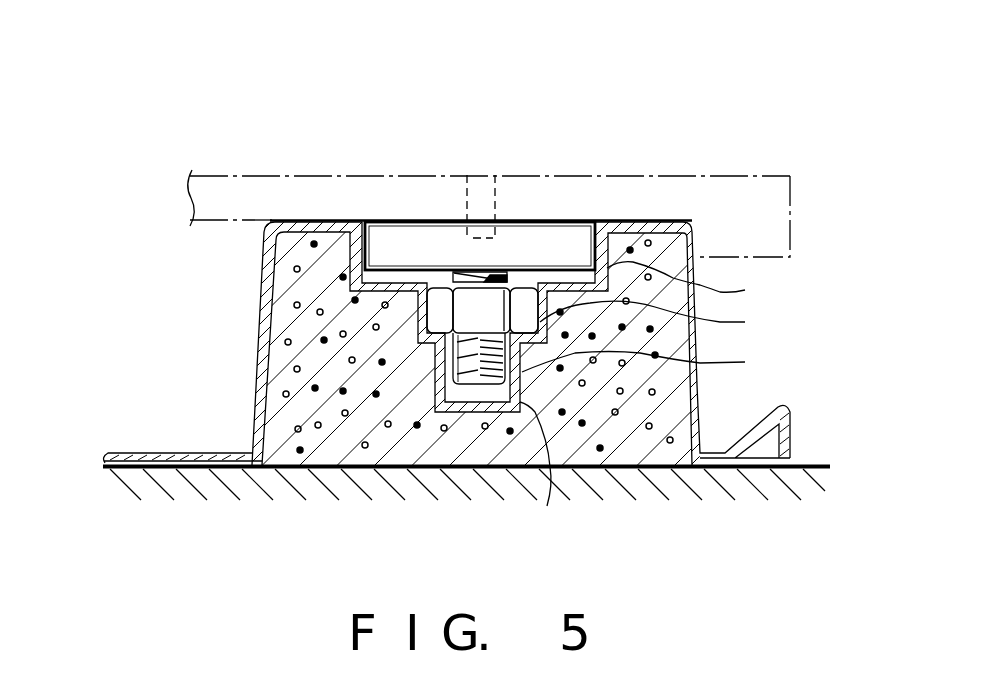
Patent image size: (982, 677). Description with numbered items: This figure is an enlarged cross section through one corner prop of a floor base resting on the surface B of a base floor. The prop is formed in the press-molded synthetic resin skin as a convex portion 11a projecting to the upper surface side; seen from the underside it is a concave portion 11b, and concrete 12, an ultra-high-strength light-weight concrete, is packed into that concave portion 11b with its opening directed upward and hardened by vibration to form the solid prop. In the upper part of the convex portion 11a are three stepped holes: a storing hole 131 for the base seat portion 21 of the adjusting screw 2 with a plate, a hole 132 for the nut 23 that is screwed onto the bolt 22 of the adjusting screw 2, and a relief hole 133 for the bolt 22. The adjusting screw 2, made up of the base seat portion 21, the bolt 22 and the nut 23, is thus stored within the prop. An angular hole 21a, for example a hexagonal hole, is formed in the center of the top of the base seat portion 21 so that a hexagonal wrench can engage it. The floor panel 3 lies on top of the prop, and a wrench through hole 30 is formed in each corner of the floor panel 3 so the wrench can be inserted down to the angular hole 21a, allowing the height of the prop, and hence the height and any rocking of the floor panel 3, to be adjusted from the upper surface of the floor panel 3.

The adjusting screw 2 is at (381, 233).
The base seat portion 21 is at (437, 237).
The angular hole 21a is at (493, 238).
The wrench through hole 30 is at (493, 172).
The floor panel 3 is at (795, 248).
The convex portion 11a is at (662, 219).
The concave portion 11b is at (550, 470).
The concrete 12 is at (660, 430).
The storing hole 131 is at (700, 283).
The hole for a nut 132 is at (666, 318).
The relief hole 133 is at (657, 363).
The bolt 22 is at (470, 372).
The nut 23 is at (443, 315).
The surface of a base floor B is at (823, 502).